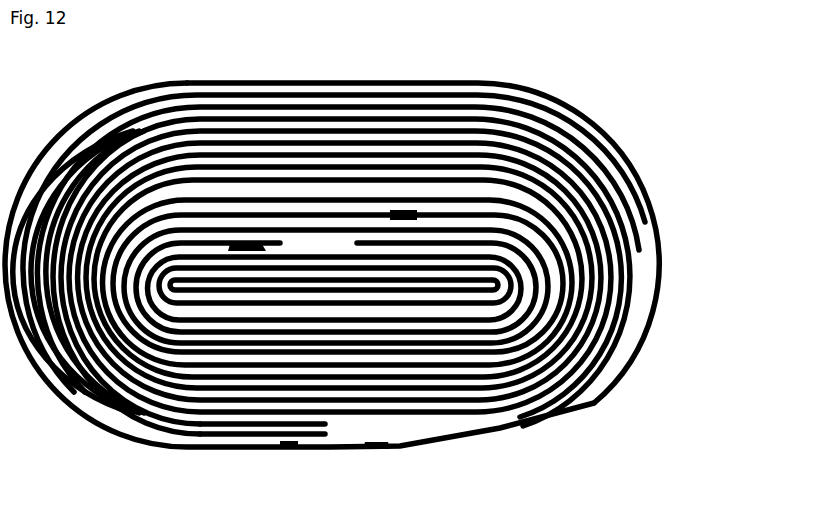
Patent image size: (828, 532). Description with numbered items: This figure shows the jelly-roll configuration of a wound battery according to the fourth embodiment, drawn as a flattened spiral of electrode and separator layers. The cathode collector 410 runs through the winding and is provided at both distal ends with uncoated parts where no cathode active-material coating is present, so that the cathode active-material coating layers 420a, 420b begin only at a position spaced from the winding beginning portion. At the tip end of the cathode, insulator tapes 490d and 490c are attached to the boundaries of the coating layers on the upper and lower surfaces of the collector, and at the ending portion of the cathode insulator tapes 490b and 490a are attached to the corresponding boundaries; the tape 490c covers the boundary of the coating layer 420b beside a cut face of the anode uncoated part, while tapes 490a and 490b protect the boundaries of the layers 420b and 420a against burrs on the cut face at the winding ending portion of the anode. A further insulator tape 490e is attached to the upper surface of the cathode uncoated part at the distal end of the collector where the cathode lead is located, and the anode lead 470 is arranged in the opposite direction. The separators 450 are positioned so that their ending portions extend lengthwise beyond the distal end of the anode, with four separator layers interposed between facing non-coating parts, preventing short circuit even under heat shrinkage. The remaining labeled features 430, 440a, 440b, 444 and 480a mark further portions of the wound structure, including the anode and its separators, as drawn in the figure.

The cathode collector 410 is at (448, 243).
The cathode active-material coating layer 420a is at (368, 243).
The cathode active-material coating layer 420b is at (375, 249).
The winding section 430 is at (341, 238).
The first winding portion 440a is at (340, 227).
The second winding portion 440b is at (341, 233).
The outer lead 444 is at (299, 279).
The separators 450 is at (262, 459).
The anode lead 470 is at (338, 281).
The connecting segment 480a is at (337, 274).
The insulator tape 490a is at (323, 220).
The insulator tape 490b is at (339, 214).
The insulator tape 490c is at (339, 221).
The insulator tape 490d is at (336, 287).
The insulator tape 490e is at (378, 470).